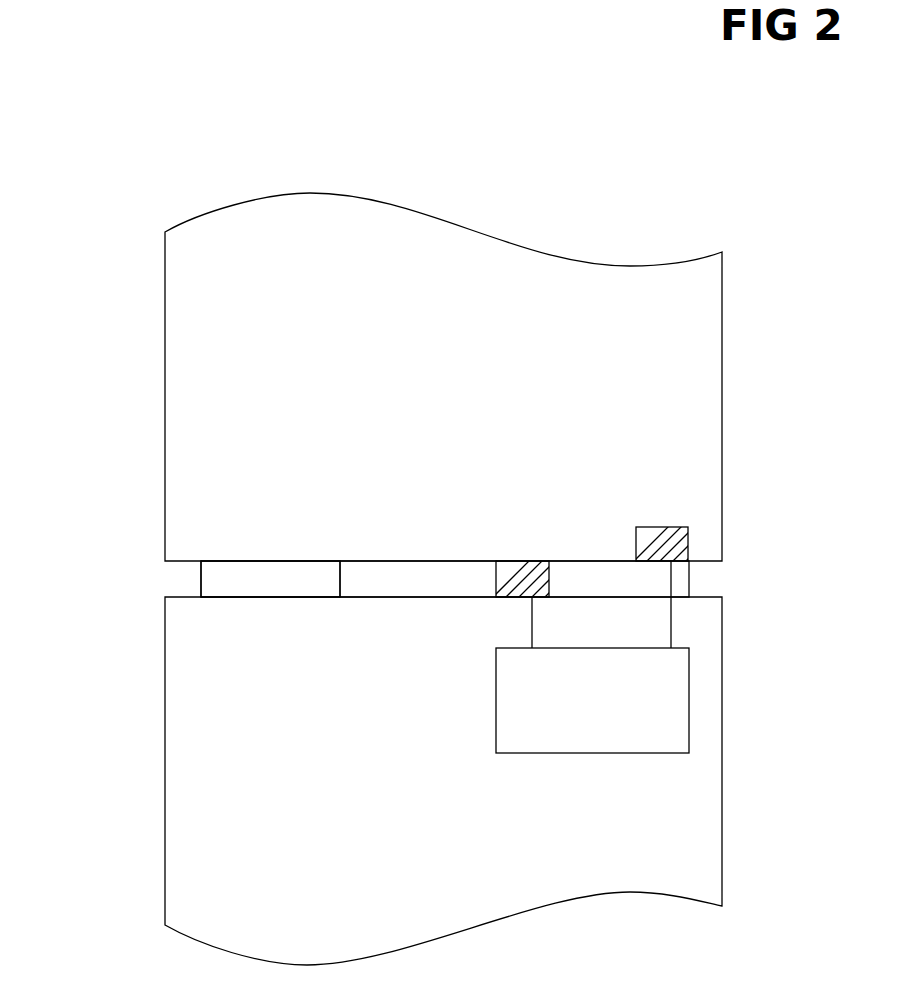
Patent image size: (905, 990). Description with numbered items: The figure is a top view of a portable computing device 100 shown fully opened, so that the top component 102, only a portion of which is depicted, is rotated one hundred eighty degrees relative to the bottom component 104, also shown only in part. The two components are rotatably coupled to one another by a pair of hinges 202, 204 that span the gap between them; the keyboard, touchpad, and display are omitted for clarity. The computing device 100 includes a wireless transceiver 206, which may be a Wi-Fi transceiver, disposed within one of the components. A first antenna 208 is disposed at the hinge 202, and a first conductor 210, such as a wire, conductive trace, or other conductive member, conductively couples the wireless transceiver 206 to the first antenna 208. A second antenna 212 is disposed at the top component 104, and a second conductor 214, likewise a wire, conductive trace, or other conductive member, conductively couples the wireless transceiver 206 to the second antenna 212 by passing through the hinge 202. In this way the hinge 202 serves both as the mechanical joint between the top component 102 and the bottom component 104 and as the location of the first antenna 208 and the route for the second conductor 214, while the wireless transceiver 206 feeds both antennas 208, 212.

The computing device 100 is at (86, 105).
The top component 102 is at (706, 846).
The bottom component 104 is at (706, 311).
The hinge 202 is at (445, 610).
The hinge 204 is at (201, 580).
The wireless transceiver 206 is at (592, 700).
The first antenna 208 is at (496, 578).
The first conductor 210 is at (532, 628).
The second antenna 212 is at (636, 547).
The second conductor 214 is at (671, 627).